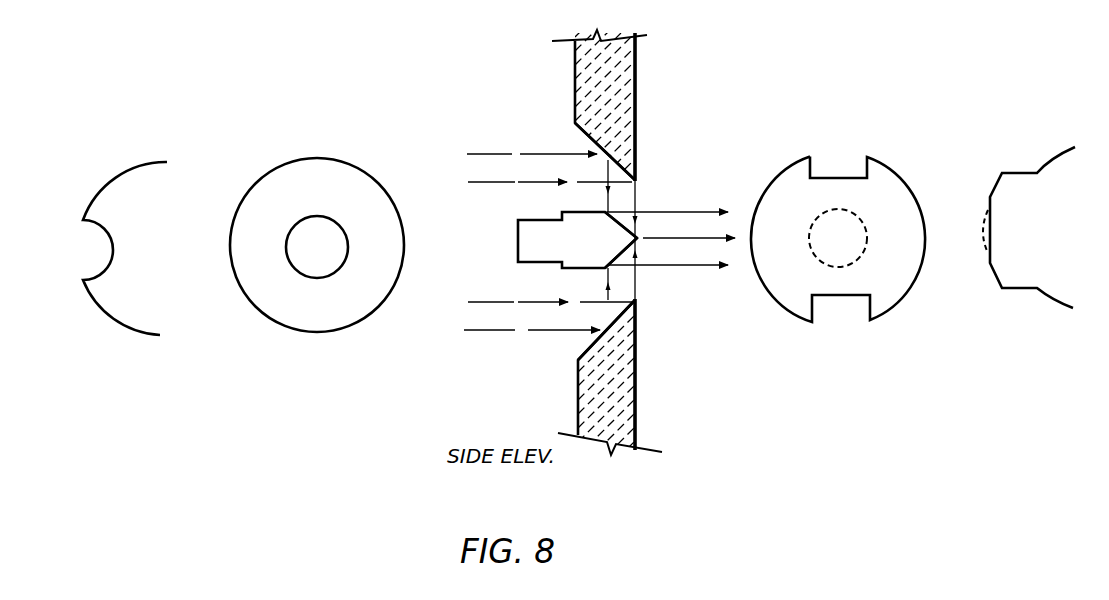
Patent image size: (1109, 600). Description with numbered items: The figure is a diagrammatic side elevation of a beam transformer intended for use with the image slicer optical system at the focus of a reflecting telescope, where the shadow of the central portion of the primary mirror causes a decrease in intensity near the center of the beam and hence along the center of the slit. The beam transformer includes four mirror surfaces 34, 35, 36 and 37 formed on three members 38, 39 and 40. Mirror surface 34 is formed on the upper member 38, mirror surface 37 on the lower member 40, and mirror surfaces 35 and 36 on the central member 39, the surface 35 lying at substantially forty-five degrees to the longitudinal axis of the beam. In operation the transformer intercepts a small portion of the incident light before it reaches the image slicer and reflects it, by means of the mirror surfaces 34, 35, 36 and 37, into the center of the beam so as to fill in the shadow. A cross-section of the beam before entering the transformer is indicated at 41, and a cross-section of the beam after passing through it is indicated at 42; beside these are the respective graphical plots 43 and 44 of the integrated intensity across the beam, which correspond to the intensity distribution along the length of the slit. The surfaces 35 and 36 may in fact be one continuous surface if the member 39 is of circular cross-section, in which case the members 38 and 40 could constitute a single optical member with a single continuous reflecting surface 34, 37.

The mirror surface 34 is at (583, 131).
The mirror surface 35 is at (624, 226).
The mirror surface 36 is at (626, 250).
The mirror surface 37 is at (590, 347).
The member 38 is at (637, 83).
The member 39 is at (587, 267).
The member 40 is at (637, 402).
The cross-section of the beam before entering the beam transformer 41 is at (318, 148).
The cross-section of the beam after passing through the beam transformer 42 is at (829, 150).
The graphical plot of integrated intensity 43 is at (147, 148).
The graphical plot of integrated intensity 44 is at (1063, 144).